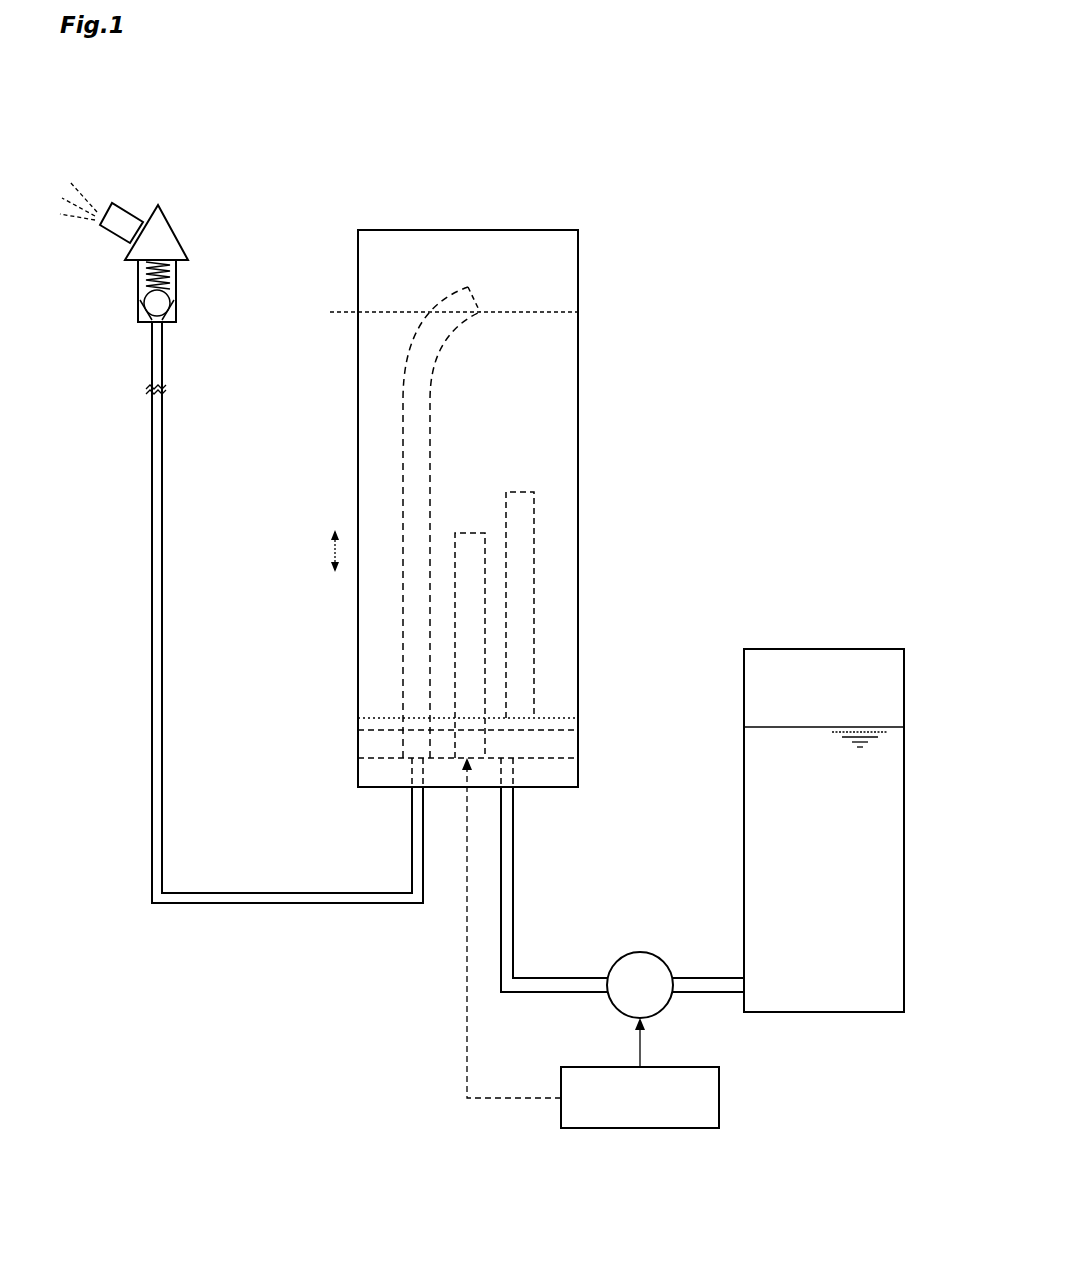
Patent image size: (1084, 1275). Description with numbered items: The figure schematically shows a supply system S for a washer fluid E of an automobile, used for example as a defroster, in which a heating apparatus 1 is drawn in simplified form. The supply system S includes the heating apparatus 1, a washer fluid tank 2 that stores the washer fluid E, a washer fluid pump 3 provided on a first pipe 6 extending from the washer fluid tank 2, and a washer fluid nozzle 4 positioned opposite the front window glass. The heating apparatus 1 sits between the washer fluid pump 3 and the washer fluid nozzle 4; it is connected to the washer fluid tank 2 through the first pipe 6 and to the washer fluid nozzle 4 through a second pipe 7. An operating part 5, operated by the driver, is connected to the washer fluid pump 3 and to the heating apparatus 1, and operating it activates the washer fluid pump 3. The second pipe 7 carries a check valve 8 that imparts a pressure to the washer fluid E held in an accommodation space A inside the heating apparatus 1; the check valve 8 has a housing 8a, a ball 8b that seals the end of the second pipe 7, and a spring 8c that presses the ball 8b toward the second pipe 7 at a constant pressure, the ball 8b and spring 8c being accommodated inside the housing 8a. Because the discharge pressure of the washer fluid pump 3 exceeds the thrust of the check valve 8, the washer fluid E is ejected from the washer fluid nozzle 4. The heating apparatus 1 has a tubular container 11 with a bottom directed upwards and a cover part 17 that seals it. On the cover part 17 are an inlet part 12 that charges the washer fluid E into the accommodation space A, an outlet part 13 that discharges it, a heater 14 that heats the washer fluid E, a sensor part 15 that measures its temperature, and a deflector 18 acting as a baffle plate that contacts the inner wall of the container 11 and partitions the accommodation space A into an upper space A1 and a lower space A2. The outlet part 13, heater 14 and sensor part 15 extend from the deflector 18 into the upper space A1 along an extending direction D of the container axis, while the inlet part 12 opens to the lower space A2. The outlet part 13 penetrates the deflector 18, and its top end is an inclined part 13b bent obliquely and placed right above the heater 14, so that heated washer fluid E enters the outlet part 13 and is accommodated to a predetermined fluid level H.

The supply system S is at (699, 160).
The heating apparatus 1 is at (545, 222).
The container 11 is at (407, 230).
The inlet part 12 is at (507, 758).
The outlet part 13 is at (396, 471).
The inclined part 13b is at (463, 287).
The heater 14 is at (468, 533).
The sensor part 15 is at (536, 513).
The cover part 17 is at (552, 775).
The deflector 18 is at (560, 730).
The washer fluid tank 2 is at (756, 787).
The washer fluid pump 3 is at (640, 952).
The washer fluid nozzle 4 is at (134, 206).
The operating part 5 is at (719, 1097).
The first pipe 6 is at (557, 978).
The second pipe 7 is at (257, 893).
The check valve 8 is at (202, 270).
The housing 8a is at (172, 292).
The ball 8b is at (195, 318).
The spring 8c is at (166, 278).
The accommodation space A is at (287, 675).
The upper space A1 is at (376, 690).
The lower space A2 is at (376, 752).
The extending direction D is at (324, 551).
The washer fluid E is at (552, 338).
The fluid level H is at (442, 313).